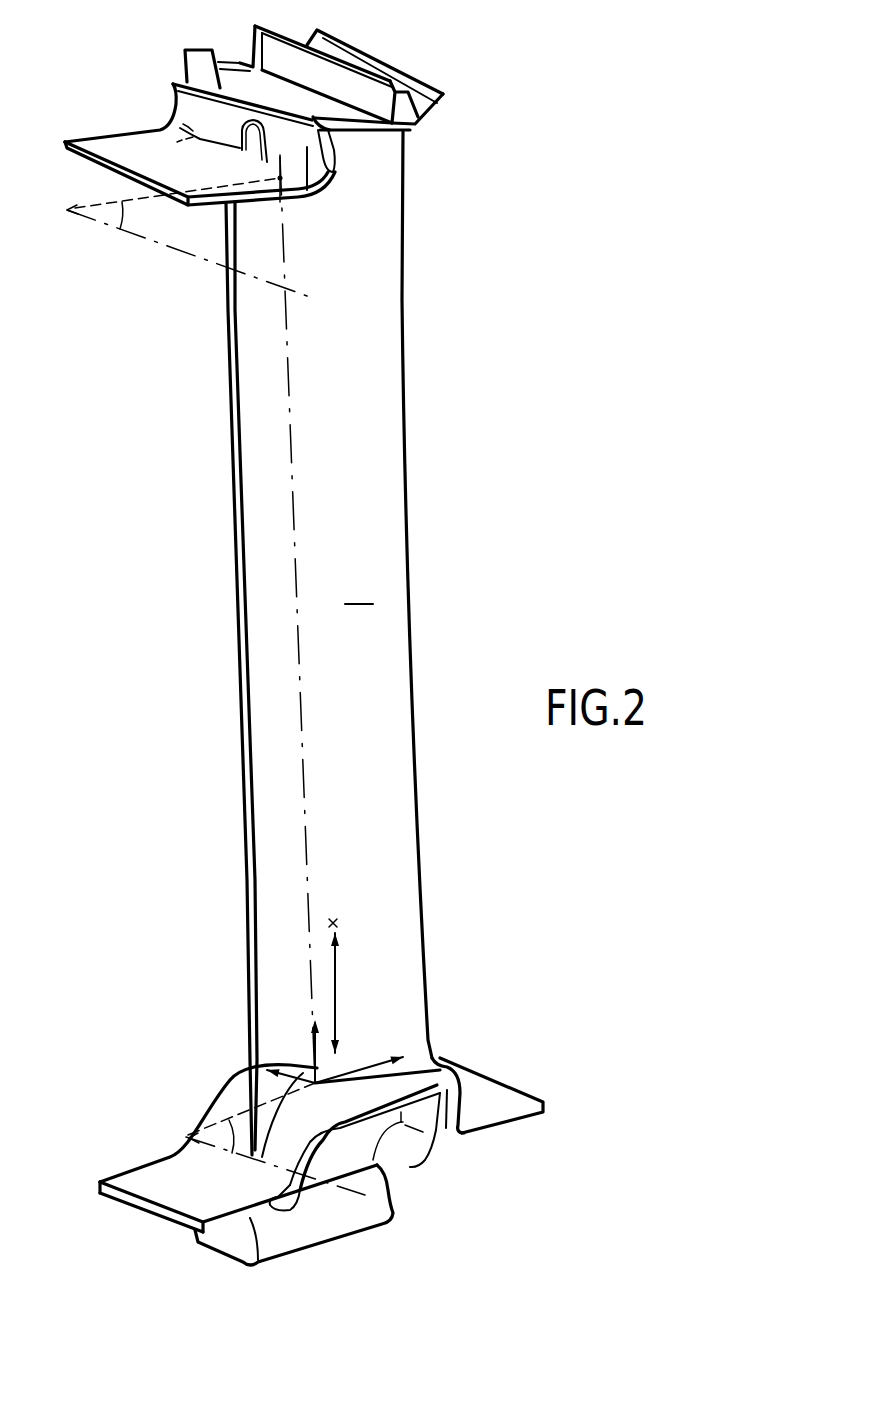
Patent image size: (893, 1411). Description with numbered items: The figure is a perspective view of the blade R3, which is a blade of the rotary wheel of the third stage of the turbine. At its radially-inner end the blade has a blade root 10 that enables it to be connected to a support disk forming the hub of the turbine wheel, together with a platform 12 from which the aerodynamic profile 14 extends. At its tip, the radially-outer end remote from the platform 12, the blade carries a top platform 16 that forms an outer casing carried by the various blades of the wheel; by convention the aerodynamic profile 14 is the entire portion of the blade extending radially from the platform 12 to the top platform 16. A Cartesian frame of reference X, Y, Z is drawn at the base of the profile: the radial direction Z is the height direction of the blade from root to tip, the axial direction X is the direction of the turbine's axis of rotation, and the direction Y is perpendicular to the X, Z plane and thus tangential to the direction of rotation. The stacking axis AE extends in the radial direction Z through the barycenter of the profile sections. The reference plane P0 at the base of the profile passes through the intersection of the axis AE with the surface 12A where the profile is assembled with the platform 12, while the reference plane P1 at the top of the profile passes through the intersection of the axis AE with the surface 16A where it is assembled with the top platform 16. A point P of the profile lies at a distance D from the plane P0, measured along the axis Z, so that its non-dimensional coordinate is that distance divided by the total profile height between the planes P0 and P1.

The blade root 10 is at (318, 1226).
The platform 12 is at (493, 1090).
The surface 12A is at (337, 1100).
The aerodynamic profile 14 is at (407, 488).
The top platform 16 is at (427, 125).
The surface 16A is at (380, 134).
The stacking axis AE is at (288, 386).
The reference plane P0 is at (203, 1132).
The reference plane P1 is at (90, 210).
The point P is at (344, 926).
The distance D is at (343, 993).
The axial direction X is at (361, 1056).
The tangential direction Y is at (289, 1062).
The radial direction Z is at (305, 1049).
The blade R3 is at (359, 594).